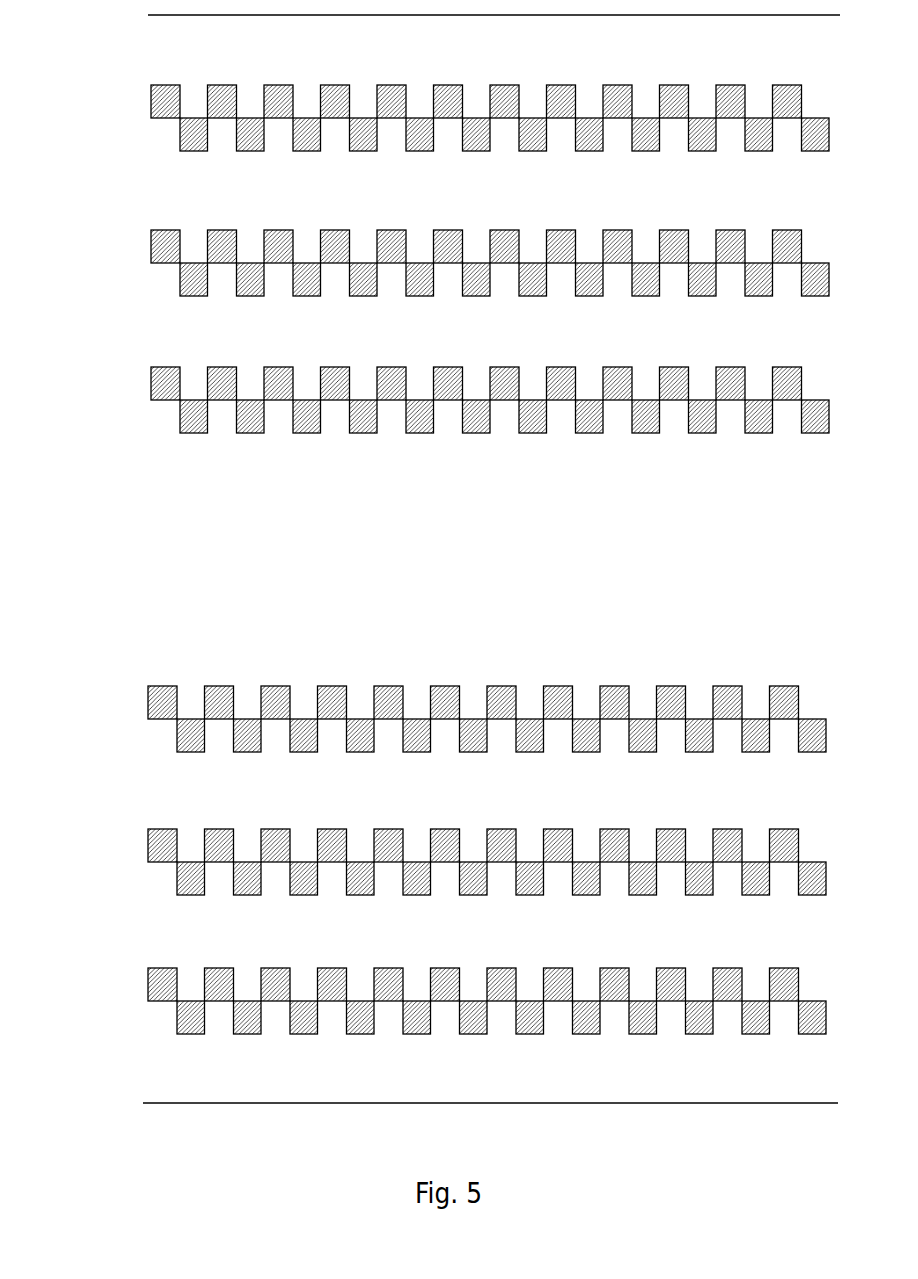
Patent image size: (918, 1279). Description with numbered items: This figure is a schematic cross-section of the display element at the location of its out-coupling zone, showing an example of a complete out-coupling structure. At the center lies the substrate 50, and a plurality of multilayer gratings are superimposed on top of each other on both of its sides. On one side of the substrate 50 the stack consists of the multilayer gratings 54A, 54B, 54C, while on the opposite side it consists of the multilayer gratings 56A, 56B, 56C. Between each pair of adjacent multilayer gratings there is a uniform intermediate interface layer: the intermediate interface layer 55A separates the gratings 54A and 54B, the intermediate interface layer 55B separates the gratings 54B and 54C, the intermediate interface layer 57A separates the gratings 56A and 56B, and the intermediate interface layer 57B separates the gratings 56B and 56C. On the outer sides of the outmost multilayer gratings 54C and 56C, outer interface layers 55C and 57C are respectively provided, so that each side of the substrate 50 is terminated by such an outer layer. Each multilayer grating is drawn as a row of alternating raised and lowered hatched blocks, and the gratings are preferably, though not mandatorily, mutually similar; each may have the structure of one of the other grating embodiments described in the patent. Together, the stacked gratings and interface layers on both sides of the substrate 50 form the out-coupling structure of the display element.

The substrate 50 is at (104, 433).
The multilayer grating 54A is at (104, 367).
The multilayer grating 54B is at (104, 230).
The outmost multilayer grating 54C is at (104, 84).
The intermediate interface layer 55A is at (104, 297).
The intermediate interface layer 55B is at (104, 151).
The outer interface layer 55C is at (104, 15).
The multilayer grating 56A is at (104, 687).
The multilayer grating 56B is at (104, 822).
The outmost multilayer grating 56C is at (104, 967).
The intermediate interface layer 57A is at (104, 755).
The intermediate interface layer 57B is at (104, 903).
The outer interface layer 57C is at (104, 1035).